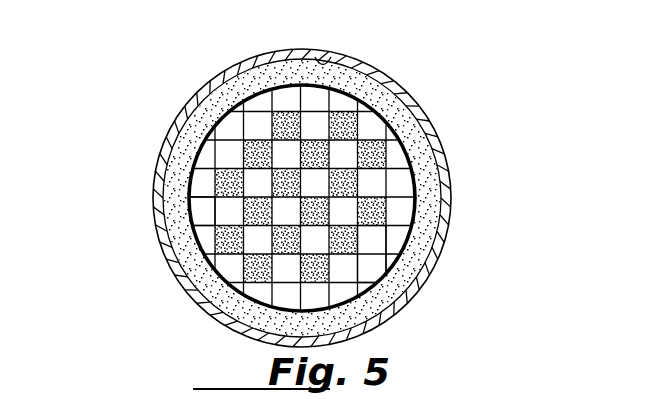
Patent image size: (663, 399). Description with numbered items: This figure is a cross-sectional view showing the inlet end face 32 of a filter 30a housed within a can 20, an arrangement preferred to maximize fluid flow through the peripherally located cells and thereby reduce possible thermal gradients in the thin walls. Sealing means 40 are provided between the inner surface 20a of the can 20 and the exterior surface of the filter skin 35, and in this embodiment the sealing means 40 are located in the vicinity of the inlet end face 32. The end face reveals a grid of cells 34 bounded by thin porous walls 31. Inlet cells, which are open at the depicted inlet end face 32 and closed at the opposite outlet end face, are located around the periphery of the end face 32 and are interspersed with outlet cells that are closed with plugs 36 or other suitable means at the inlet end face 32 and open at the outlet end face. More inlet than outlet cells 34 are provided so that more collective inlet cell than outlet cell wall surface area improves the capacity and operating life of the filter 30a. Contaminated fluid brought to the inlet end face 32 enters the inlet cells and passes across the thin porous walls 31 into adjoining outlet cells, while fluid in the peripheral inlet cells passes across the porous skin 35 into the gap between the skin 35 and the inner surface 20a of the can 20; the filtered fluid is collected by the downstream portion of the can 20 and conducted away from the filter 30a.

The can 20 is at (435, 130).
The inner surface of the can 20a is at (331, 57).
The filter 30a is at (385, 103).
The thin porous walls 31 is at (368, 257).
The inlet end face 32 is at (272, 111).
The cells 34 is at (205, 210).
The skin 35 is at (207, 267).
The plugs 36 is at (257, 155).
The sealing means 40 is at (430, 202).